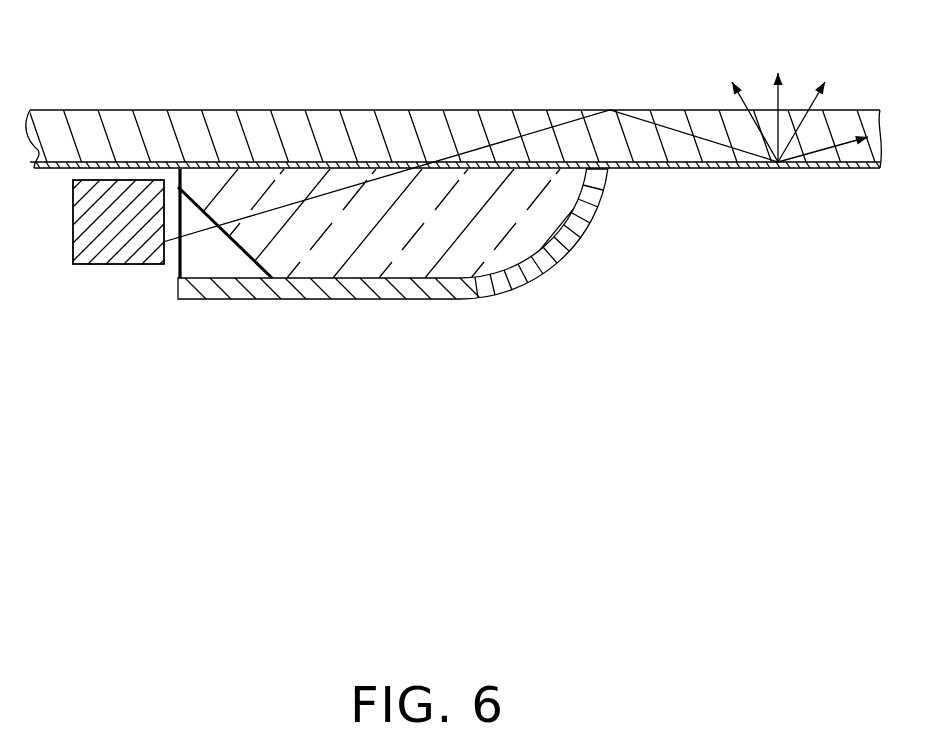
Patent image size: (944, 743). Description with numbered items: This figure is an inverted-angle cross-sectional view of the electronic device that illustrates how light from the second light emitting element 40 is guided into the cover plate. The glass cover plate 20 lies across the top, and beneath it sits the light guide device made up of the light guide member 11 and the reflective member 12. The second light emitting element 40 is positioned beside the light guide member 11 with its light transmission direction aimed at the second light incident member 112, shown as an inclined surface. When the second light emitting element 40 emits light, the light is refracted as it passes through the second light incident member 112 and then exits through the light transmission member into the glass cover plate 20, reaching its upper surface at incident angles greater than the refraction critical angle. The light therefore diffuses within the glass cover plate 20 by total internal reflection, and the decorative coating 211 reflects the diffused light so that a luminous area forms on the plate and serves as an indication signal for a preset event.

The glass cover plate 20 is at (195, 137).
The decorative coating 211 is at (678, 168).
The second light emitting element 40 is at (127, 247).
The light guide member 11 is at (468, 258).
The reflective member 12 is at (365, 288).
The second light incident member 112 is at (240, 252).